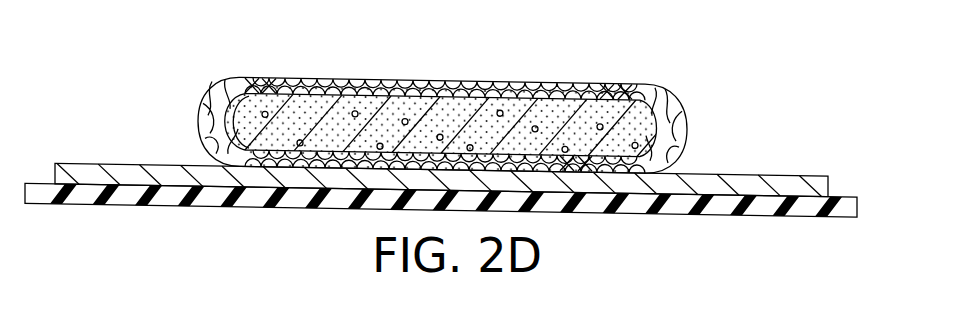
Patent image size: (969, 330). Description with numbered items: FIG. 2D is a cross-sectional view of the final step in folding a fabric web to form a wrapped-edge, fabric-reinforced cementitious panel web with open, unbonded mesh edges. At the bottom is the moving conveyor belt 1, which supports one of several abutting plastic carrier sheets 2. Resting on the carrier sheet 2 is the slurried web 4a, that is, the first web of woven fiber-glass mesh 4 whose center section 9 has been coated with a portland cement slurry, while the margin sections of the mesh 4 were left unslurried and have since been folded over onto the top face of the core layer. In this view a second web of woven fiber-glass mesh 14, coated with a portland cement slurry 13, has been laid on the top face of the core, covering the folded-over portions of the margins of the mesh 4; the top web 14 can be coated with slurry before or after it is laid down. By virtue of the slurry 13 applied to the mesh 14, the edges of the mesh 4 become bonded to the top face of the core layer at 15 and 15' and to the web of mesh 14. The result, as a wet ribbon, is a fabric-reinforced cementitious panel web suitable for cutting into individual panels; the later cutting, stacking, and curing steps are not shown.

The moving conveyor belt 1 is at (240, 200).
The plastic carrier sheet 2 is at (168, 166).
The woven fiber-glass mesh 4 is at (198, 118).
The slurried web 4a is at (577, 165).
The center section 9 is at (337, 168).
The portland cement slurry 13 is at (547, 82).
The second web of woven fiber-glass mesh 14 is at (470, 81).
The bonding location 15 is at (255, 60).
The bonding location 15' is at (631, 68).